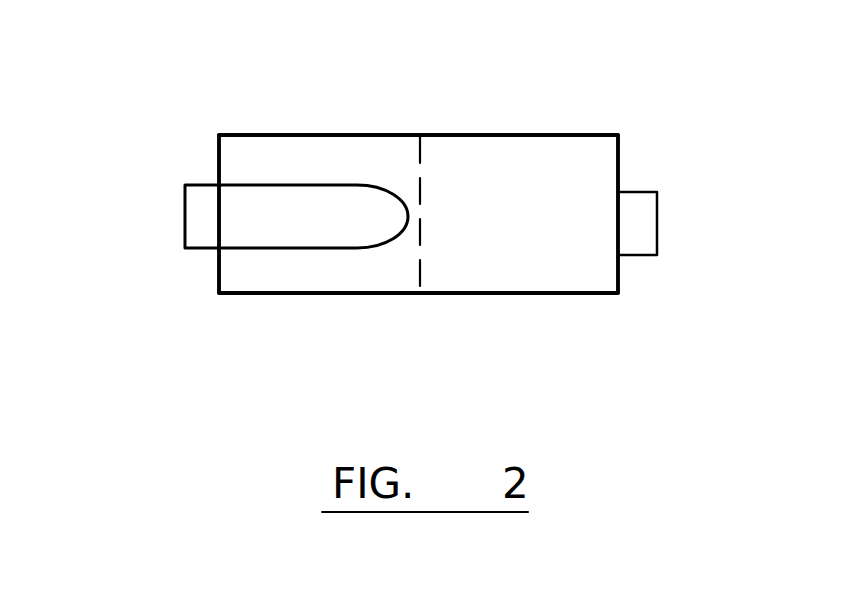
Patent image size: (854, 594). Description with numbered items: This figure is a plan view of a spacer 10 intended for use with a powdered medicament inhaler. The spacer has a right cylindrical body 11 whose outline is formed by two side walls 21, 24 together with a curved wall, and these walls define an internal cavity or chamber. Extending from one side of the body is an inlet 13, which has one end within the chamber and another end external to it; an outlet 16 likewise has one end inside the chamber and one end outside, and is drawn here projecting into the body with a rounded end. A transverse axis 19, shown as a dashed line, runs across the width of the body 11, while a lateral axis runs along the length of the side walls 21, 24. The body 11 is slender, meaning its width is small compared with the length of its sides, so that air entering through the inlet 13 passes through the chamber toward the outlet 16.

The spacer 10 is at (662, 133).
The right cylindrical body 11 is at (535, 135).
The inlet 13 is at (635, 237).
The outlet 16 is at (228, 216).
The transverse axis 19 is at (420, 135).
The side wall 21 is at (307, 135).
The side wall 24 is at (308, 295).